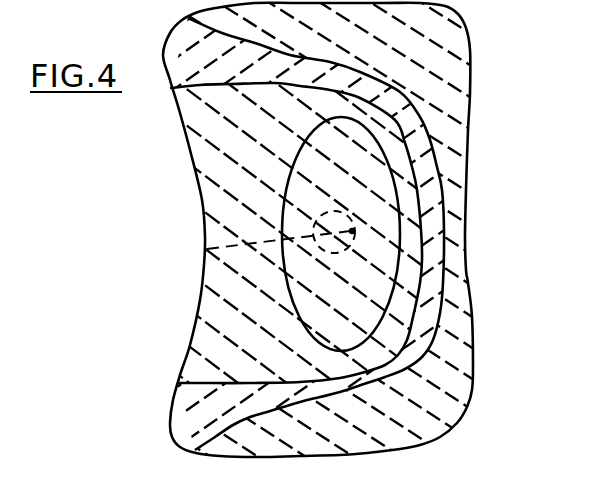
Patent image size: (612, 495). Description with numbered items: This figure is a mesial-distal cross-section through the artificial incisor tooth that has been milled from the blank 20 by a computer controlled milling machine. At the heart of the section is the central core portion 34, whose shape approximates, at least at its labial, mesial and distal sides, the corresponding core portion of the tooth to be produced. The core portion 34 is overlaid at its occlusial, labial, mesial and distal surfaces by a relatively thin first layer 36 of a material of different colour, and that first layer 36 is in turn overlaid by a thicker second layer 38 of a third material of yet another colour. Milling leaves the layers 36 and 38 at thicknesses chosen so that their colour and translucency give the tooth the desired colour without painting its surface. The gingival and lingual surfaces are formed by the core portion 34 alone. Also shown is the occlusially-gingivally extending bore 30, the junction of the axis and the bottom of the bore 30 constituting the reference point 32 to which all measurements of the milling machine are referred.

The blank 20 is at (478, 42).
The bore 30 is at (207, 249).
The reference point 32 is at (356, 231).
The central core portion 34 is at (412, 165).
The first layer 36 is at (441, 137).
The second layer 38 is at (455, 103).